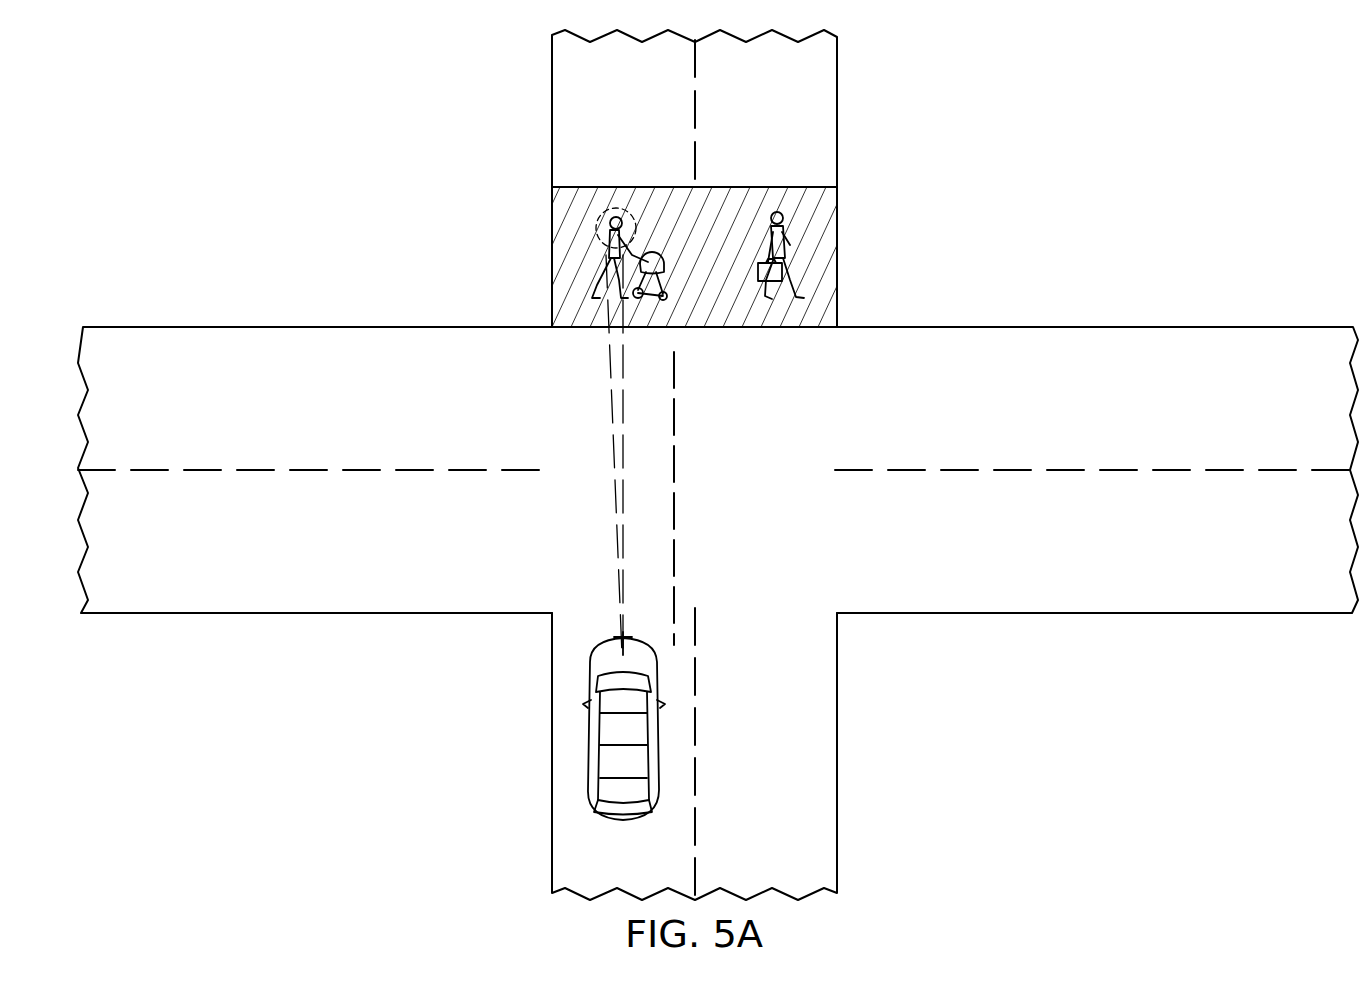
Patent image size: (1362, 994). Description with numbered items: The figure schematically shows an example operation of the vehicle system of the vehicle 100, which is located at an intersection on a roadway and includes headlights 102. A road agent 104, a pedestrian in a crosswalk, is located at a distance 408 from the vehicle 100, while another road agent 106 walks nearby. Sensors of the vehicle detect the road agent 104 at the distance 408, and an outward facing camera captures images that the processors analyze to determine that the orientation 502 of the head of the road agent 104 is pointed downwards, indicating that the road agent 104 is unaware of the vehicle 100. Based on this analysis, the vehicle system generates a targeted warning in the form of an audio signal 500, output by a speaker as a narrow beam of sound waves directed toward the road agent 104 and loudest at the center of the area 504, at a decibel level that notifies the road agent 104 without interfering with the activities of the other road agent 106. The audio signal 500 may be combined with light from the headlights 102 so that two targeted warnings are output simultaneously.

The vehicle 100 is at (623, 823).
The headlights 102 is at (598, 650).
The road agent 104 is at (605, 247).
The road agent 106 is at (790, 245).
The distance 408 is at (675, 415).
The audio signal 500 is at (617, 520).
The orientation of the head 502 is at (617, 216).
The area 504 is at (596, 228).